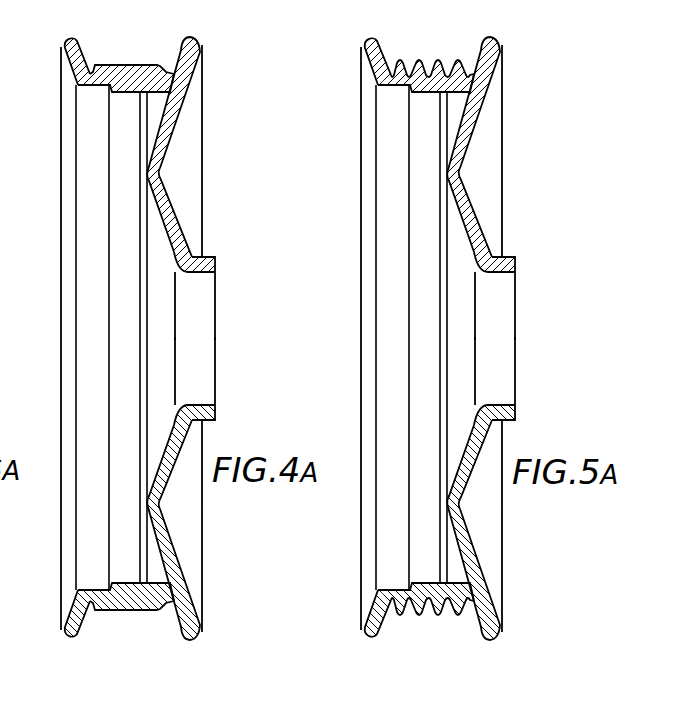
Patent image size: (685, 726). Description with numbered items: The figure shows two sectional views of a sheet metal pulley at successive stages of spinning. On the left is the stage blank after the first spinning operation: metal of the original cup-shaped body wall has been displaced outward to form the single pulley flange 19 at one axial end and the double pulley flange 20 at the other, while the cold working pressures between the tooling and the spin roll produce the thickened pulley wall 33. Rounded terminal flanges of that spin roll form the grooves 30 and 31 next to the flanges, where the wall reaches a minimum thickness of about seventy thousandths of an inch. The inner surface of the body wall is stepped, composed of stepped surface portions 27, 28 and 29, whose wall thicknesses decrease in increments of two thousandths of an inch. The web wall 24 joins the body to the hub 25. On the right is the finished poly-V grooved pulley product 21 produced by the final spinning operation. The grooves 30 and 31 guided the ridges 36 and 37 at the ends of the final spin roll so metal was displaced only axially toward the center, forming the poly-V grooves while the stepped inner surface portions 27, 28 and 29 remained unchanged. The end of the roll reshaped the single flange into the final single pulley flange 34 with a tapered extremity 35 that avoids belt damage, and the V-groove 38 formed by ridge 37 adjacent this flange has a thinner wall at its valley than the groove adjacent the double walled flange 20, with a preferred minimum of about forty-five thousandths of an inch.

In FIG. 4A, the single pulley flange 19 is at (64, 46).
In FIG. 4A, the double pulley flange 20 is at (198, 48).
In FIG. 5A, the double pulley flange 20 is at (500, 623).
In FIG. 5A, the poly-V grooved pulley product 21 is at (453, 344).
In FIG. 4A, the web wall 24 is at (163, 183).
In FIG. 5A, the web wall 24 is at (462, 190).
In FIG. 4A, the hub 25 is at (213, 267).
In FIG. 5A, the hub 25 is at (517, 265).
In FIG. 4A, the stepped surface portion 27 is at (160, 87).
In FIG. 4A, the stepped surface portion 28 is at (128, 90).
In FIG. 4A, the stepped surface portion 29 is at (97, 88).
In FIG. 4A, the groove 30 is at (167, 600).
In FIG. 4A, the groove 31 is at (88, 603).
In FIG. 4A, the thickened pulley wall 33 is at (157, 82).
In FIG. 5A, the final single pulley flange 34 is at (373, 68).
In FIG. 5A, the tapered extremity 35 is at (370, 47).
In FIG. 5A, the ridge 36 is at (467, 605).
In FIG. 5A, the ridge 37 is at (385, 605).
In FIG. 5A, the V-groove 38 is at (393, 80).